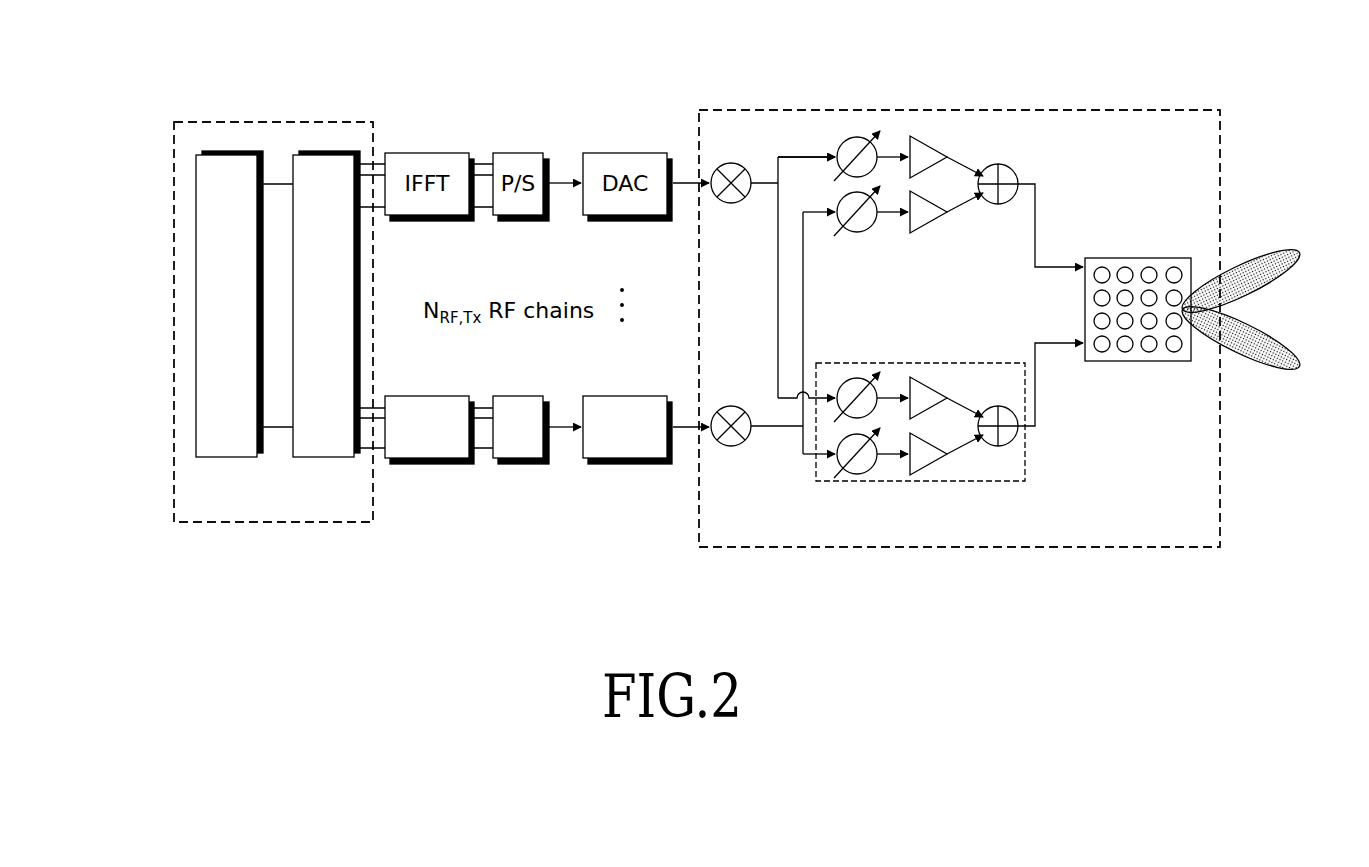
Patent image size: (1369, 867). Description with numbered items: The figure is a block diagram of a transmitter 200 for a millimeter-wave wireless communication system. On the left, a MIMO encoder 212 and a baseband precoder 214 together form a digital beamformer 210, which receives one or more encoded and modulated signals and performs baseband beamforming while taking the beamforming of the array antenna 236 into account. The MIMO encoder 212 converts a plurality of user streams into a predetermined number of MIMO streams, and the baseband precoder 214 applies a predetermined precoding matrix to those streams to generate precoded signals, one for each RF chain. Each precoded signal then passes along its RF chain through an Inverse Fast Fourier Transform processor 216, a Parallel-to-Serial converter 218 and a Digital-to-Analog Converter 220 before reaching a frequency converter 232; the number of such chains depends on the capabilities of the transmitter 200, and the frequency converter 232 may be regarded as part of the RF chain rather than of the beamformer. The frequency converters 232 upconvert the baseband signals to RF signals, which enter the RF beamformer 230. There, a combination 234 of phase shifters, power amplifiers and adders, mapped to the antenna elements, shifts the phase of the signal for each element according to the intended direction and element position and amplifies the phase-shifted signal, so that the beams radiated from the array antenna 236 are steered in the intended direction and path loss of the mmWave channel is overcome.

The transmitter 200 is at (1056, 79).
The digital beamformer 210 is at (275, 522).
The MIMO encoder 212 is at (229, 458).
The baseband precoder 214 is at (320, 458).
The Inverse Fast Fourier Transform (IFFT) processor 216 is at (434, 461).
The Parallel-to-Serial (P/S) converter 218 is at (525, 461).
The Digital-to-Analog Converter (DAC) 220 is at (634, 461).
The RF beamformer 230 is at (962, 548).
The frequency converter 232 is at (731, 447).
The combination of phase shifters, power amplifiers, and adders 234 is at (922, 482).
The array antenna 236 is at (1140, 362).